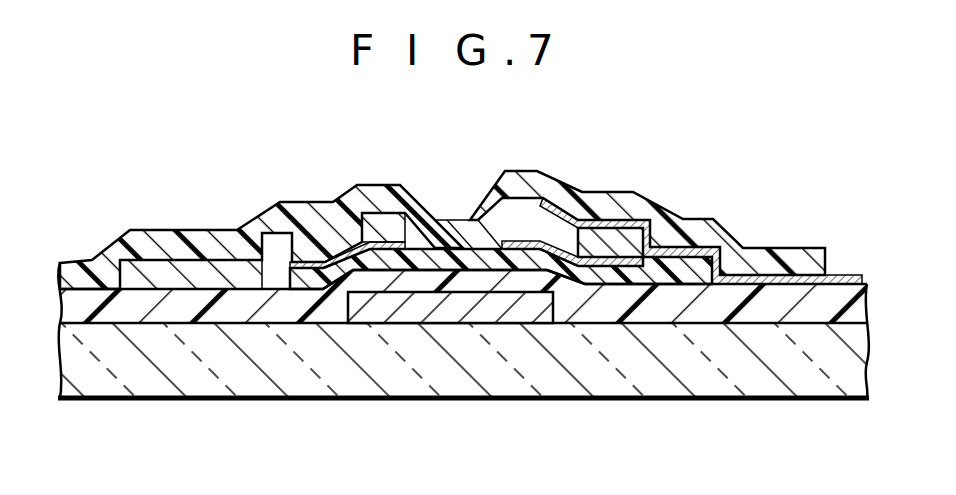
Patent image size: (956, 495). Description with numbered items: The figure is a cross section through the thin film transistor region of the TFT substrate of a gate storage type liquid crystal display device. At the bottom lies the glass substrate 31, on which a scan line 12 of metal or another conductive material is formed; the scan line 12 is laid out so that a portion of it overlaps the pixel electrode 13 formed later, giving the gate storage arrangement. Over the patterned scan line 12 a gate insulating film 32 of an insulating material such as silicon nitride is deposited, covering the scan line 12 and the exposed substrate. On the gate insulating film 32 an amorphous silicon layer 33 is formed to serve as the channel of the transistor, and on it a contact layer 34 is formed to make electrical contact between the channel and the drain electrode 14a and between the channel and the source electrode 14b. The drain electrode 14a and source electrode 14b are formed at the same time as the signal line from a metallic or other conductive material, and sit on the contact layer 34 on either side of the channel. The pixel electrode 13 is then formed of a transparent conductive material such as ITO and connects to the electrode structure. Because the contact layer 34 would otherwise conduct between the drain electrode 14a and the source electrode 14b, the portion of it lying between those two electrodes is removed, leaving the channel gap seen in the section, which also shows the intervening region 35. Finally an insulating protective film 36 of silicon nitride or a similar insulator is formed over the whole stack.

The glass substrate 31 is at (642, 376).
The gate insulating film 32 is at (710, 305).
The scan line 12 is at (454, 305).
The amorphous silicon layer 33 is at (417, 257).
The contact layer 34 is at (303, 272).
The drain electrode 14a is at (320, 243).
The insulating film 35 is at (462, 230).
The source electrode 14b is at (598, 235).
The insulating protective film 36 is at (530, 181).
The pixel electrode 13 is at (800, 280).